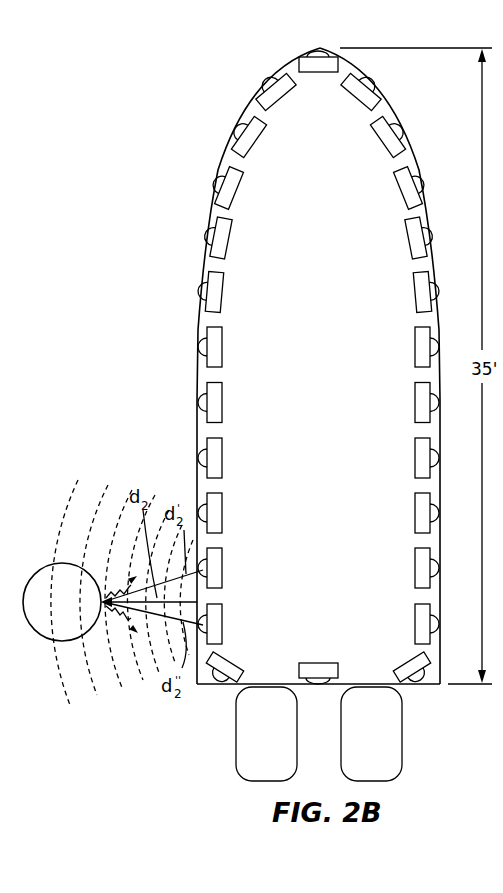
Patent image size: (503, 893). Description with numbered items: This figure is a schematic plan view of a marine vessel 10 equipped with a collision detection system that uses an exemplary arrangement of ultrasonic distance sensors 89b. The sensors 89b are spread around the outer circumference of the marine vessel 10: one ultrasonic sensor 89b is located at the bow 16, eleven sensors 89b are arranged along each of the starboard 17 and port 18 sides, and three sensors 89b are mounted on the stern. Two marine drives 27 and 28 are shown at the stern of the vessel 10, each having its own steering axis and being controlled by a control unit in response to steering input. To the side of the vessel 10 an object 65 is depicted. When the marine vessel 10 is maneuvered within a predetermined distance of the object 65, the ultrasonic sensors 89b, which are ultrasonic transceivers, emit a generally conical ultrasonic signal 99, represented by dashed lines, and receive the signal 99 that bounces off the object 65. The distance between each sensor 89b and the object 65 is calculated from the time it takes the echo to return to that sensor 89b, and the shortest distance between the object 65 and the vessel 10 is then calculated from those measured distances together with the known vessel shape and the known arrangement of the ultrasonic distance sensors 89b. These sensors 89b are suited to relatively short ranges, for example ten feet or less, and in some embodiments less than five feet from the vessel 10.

The marine vessel 10 is at (236, 72).
The bow 16 is at (318, 50).
The starboard side 17 is at (435, 250).
The port side 18 is at (204, 250).
The marine drive 27 is at (236, 750).
The marine drive 28 is at (402, 750).
The object 65 is at (62, 602).
The ultrasonic distance sensors 89b is at (220, 577).
The ultrasonic signal 99 is at (63, 517).